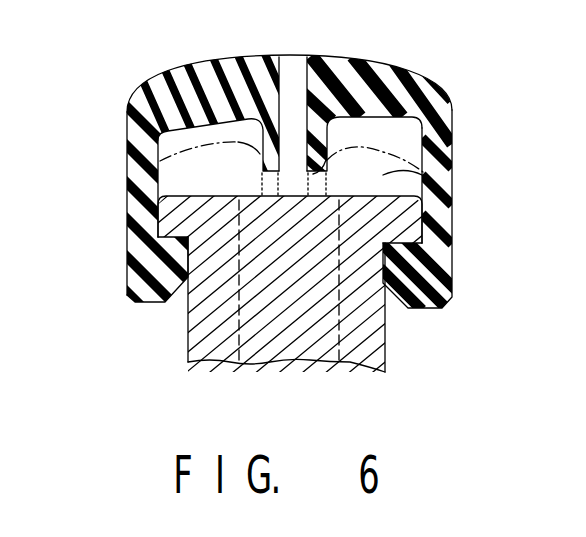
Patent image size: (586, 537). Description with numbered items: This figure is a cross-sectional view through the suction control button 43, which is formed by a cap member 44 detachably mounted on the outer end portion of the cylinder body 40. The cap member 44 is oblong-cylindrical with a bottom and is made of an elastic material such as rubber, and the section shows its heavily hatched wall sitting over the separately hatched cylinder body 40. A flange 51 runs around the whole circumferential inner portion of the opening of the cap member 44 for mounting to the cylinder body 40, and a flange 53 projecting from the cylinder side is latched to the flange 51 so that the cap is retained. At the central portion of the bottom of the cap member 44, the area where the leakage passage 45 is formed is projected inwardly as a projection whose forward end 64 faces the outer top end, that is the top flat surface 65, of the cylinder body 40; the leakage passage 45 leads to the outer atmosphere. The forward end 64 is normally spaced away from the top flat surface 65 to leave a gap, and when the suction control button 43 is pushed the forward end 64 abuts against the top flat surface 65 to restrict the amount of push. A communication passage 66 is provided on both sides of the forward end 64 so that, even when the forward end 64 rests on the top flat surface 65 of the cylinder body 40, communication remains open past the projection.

The cylinder body 40 is at (214, 318).
The suction control button 43 is at (118, 119).
The cap member 44 is at (136, 178).
The leakage passage 45 is at (302, 92).
The flange 51 is at (423, 279).
The flange 53 is at (408, 231).
The forward end 64 is at (333, 173).
The top flat surface 65 is at (273, 190).
The communication passage 66 is at (422, 176).